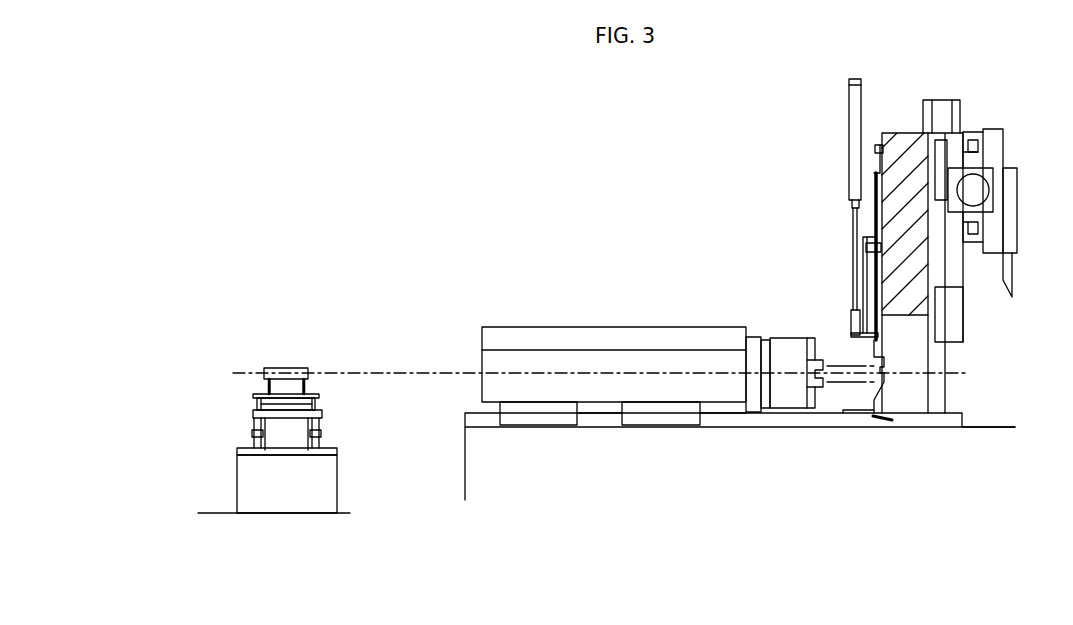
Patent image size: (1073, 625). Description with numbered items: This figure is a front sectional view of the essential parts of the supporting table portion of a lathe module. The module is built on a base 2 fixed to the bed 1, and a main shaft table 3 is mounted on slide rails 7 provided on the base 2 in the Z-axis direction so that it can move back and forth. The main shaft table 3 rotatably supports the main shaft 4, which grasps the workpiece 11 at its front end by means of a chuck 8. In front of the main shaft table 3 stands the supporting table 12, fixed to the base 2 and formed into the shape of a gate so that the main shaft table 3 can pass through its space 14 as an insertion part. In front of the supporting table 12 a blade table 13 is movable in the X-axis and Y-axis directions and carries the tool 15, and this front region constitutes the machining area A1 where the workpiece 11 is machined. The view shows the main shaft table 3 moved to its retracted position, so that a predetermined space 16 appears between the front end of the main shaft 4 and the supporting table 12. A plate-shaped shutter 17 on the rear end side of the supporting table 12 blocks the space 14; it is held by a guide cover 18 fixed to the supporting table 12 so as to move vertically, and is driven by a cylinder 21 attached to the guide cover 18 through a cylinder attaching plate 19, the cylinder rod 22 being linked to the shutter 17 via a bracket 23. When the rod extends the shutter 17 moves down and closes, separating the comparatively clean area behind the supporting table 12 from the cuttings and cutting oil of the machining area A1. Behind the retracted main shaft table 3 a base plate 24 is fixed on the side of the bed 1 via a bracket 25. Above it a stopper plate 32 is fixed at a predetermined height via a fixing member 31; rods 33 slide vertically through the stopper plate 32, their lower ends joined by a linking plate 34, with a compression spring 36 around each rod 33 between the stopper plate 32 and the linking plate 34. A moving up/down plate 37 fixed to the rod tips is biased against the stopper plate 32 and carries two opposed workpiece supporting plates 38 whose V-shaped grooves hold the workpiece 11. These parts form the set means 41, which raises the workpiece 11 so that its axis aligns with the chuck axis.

The bed 1 is at (218, 512).
The base 2 is at (997, 426).
The main shaft table 3 is at (663, 327).
The main shaft 4 is at (755, 340).
The slide rail 7 is at (472, 420).
The chuck 8 is at (815, 335).
The workpiece 11 is at (285, 368).
The supporting table 12 is at (893, 133).
The blade table 13 is at (998, 132).
The space 14 is at (910, 363).
The tool 15 is at (1012, 272).
The space 16 is at (836, 397).
The shutter 17 is at (874, 357).
The guide cover 18 is at (872, 287).
The cylinder attaching plate 19 is at (855, 224).
The cylinder 21 is at (850, 144).
The cylinder rod 22 is at (864, 254).
The bracket 23 is at (865, 334).
The base plate 24 is at (244, 452).
The bracket 25 is at (330, 490).
The fixing member 31 is at (297, 433).
The stopper plate 32 is at (258, 403).
The rod 33 is at (258, 400).
The linking plate 34 is at (253, 434).
The compression spring 36 is at (254, 430).
The moving up/down plate 37 is at (298, 397).
The workpiece supporting plate 38 is at (268, 382).
The set means 41 is at (333, 437).
The machining area A1 is at (974, 393).